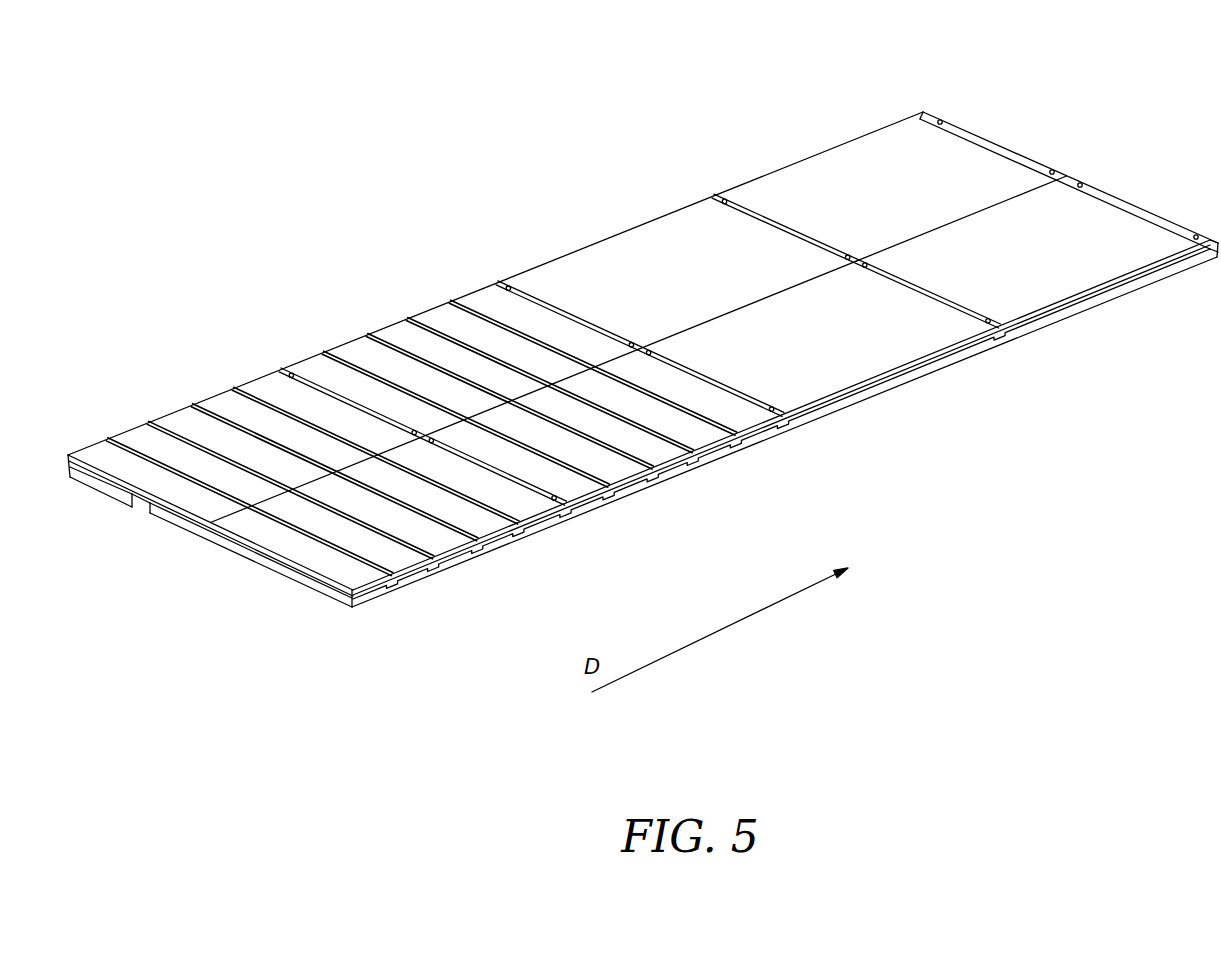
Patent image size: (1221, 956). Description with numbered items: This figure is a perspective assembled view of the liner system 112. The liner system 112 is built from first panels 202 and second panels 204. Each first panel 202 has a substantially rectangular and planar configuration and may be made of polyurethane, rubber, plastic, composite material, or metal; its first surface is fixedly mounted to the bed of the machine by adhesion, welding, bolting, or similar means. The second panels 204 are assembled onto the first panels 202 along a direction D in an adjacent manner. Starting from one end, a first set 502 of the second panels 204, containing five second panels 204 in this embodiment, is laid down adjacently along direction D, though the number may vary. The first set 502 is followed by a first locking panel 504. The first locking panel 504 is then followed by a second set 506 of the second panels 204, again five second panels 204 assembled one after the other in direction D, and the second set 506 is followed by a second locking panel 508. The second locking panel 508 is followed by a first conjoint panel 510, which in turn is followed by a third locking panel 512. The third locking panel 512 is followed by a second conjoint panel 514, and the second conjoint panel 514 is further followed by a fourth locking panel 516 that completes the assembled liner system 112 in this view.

The liner system 112 is at (1090, 148).
The first panel 202 is at (1038, 331).
The second panel 204 is at (132, 444).
The first set of second panels 502 is at (165, 393).
The first locking panel 504 is at (283, 373).
The second set of second panels 506 is at (330, 328).
The second locking panel 508 is at (498, 283).
The first conjoint panel 510 is at (600, 230).
The third locking panel 512 is at (715, 197).
The second conjoint panel 514 is at (807, 142).
The fourth locking panel 516 is at (1000, 143).